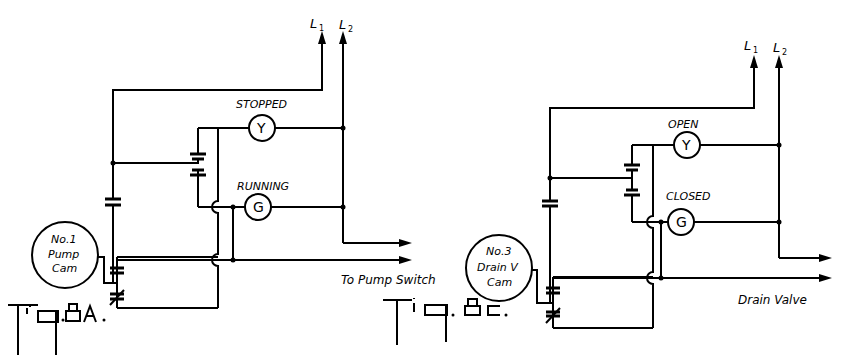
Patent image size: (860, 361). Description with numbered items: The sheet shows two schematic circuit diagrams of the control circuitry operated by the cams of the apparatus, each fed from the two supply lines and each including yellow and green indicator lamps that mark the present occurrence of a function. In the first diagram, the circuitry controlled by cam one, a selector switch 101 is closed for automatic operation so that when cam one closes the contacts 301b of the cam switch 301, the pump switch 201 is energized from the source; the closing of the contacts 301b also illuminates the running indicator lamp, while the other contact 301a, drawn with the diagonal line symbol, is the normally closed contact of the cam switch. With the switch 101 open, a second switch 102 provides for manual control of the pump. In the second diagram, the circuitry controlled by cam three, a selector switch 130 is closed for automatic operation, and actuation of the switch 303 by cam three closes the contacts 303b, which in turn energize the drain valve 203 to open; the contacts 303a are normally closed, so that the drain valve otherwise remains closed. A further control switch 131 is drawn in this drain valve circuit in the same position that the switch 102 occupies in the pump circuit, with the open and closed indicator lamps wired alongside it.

In FIG. 8A, the switch 101 is at (110, 208).
In FIG. 8A, the switch 102 is at (210, 166).
In FIG. 8A, the pump switch 201 is at (394, 248).
In FIG. 8A, the cam switch 301 is at (109, 285).
In FIG. 8A, the normally closed contact 301a is at (126, 297).
In FIG. 8A, the contacts 301b is at (126, 271).
In FIG. 8C, the switch 130 is at (546, 209).
In FIG. 8C, the switch 131 is at (640, 183).
In FIG. 8C, the drain valve 203 is at (809, 265).
In FIG. 8C, the switch 303 is at (544, 314).
In FIG. 8C, the contacts 303a is at (562, 314).
In FIG. 8C, the contacts 303b is at (562, 290).